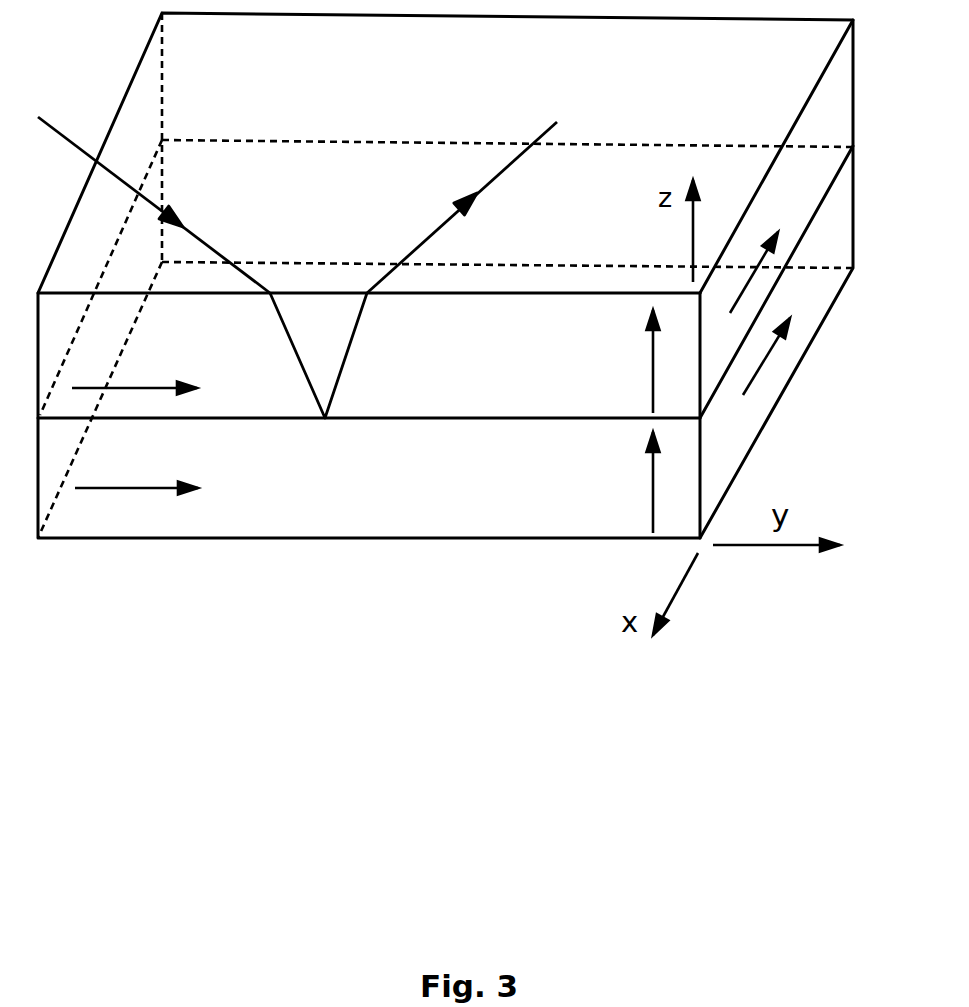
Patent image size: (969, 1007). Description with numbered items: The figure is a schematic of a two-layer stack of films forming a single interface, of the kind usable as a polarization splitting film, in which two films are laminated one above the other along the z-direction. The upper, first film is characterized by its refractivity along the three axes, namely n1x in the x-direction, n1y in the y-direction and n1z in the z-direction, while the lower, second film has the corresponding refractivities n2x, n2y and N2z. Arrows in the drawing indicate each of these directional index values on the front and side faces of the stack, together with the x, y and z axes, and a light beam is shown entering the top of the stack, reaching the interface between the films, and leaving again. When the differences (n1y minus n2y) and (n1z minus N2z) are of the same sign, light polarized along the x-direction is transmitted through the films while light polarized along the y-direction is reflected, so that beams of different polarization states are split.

The refractivity of first film along y-direction n1y is at (140, 368).
The refractivity of second film along y-direction n2y is at (139, 464).
The refractivity of first film along z-direction n1z is at (619, 361).
The refractivity of second film along z-direction N2z is at (619, 482).
The refractivity of first film along x-direction n1x is at (769, 255).
The refractivity of second film along x-direction n2x is at (785, 340).